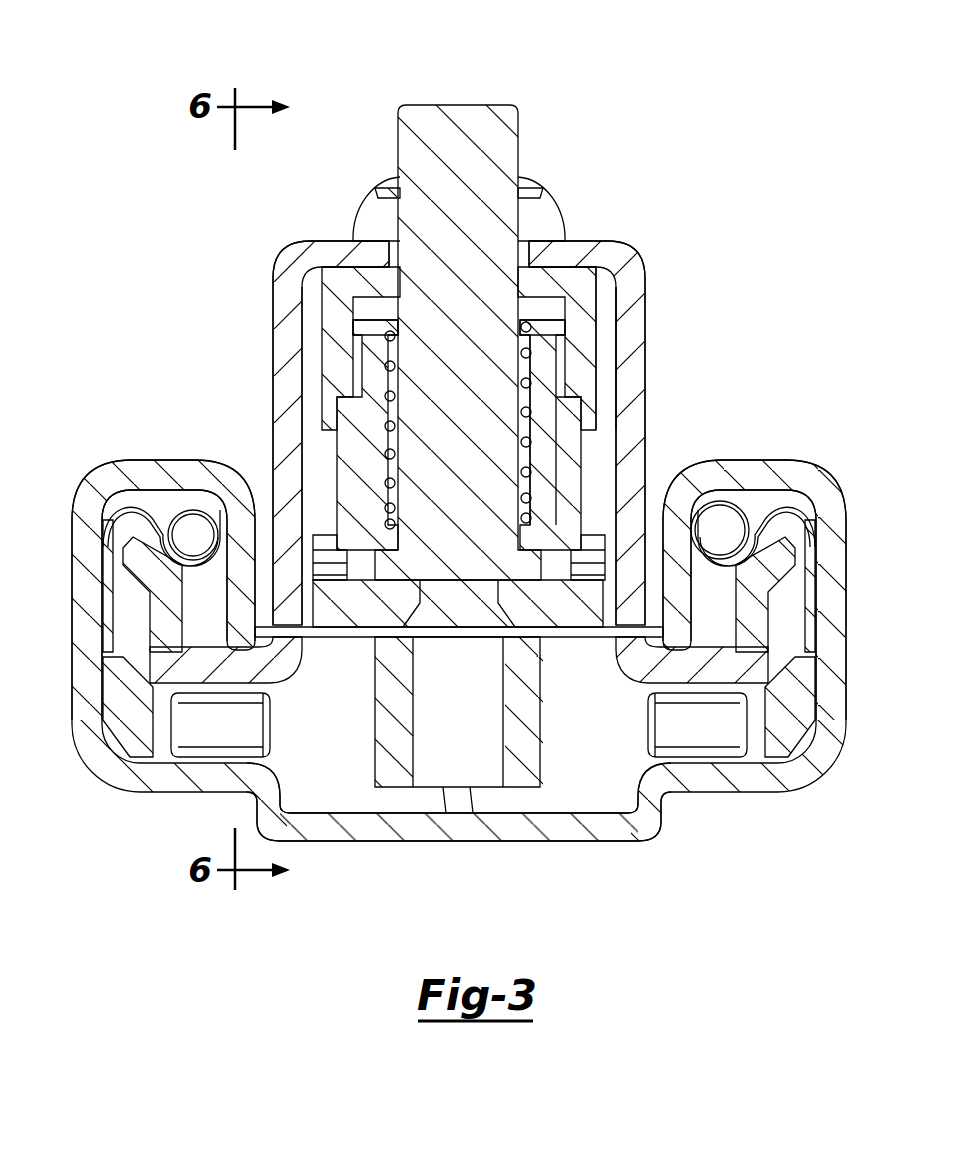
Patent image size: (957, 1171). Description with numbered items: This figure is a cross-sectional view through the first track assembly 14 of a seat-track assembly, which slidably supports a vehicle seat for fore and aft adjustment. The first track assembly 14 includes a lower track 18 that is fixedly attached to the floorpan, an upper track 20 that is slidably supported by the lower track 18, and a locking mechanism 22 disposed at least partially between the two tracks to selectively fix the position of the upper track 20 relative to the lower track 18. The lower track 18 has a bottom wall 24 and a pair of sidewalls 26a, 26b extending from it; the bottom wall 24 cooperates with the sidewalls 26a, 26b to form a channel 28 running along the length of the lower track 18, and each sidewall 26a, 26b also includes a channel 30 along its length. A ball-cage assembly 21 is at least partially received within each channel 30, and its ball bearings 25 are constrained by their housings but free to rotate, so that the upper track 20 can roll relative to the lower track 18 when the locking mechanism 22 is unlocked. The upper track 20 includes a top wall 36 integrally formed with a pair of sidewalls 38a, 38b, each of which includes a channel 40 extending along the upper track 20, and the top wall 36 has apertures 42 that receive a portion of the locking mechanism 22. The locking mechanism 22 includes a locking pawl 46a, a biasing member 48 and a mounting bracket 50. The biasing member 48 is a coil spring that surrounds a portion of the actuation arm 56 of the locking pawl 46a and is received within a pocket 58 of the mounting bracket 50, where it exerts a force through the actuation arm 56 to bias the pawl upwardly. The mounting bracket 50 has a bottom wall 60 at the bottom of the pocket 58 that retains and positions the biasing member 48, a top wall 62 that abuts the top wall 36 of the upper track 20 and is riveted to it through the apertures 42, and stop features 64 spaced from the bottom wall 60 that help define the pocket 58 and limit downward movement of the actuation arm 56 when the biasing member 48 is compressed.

The first track assembly 14 is at (715, 203).
The lower track 18 is at (141, 795).
The upper track 20 is at (268, 272).
The ball-cage assembly 21 is at (207, 512).
The locking mechanism 22 is at (531, 218).
The bottom wall 24 is at (572, 843).
The ball bearing 25 is at (203, 525).
The sidewall 26a is at (88, 600).
The sidewall 26b is at (833, 627).
The channel 28 is at (608, 793).
The channel 30 is at (148, 493).
The top wall 36 is at (577, 244).
The sidewall 38a is at (290, 365).
The sidewall 38b is at (633, 408).
The channel 40 is at (197, 640).
The aperture 42 is at (388, 253).
The locking pawl 46a is at (350, 642).
The biasing member 48 is at (390, 327).
The mounting bracket 50 is at (603, 290).
The actuation arm 56 is at (456, 140).
The pocket 58 is at (370, 425).
The bottom wall 60 is at (545, 522).
The top wall 62 is at (338, 268).
The stop feature 64 is at (558, 395).